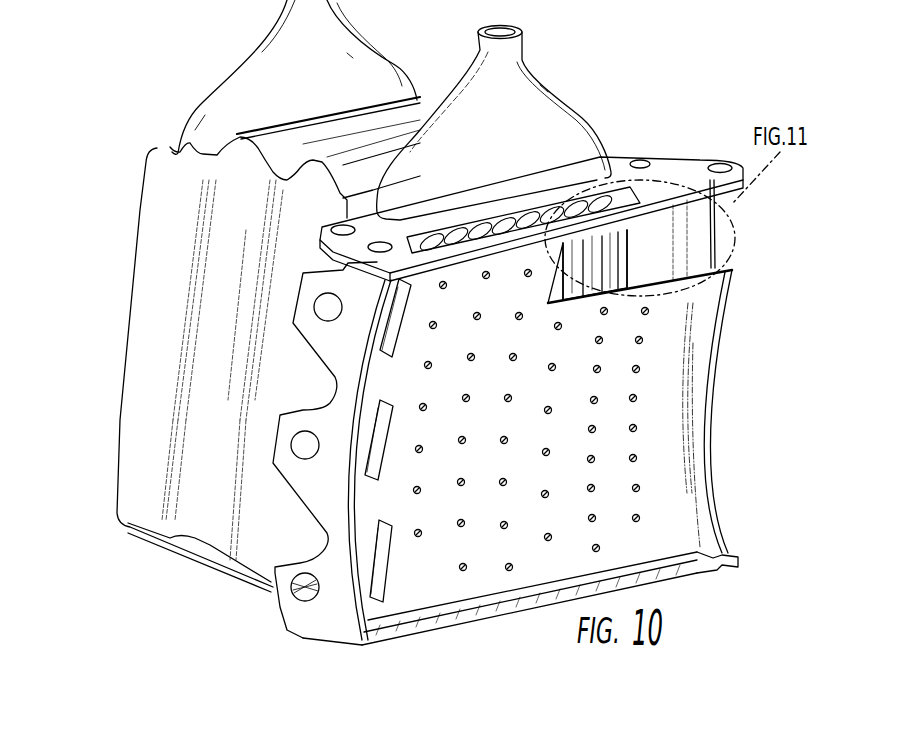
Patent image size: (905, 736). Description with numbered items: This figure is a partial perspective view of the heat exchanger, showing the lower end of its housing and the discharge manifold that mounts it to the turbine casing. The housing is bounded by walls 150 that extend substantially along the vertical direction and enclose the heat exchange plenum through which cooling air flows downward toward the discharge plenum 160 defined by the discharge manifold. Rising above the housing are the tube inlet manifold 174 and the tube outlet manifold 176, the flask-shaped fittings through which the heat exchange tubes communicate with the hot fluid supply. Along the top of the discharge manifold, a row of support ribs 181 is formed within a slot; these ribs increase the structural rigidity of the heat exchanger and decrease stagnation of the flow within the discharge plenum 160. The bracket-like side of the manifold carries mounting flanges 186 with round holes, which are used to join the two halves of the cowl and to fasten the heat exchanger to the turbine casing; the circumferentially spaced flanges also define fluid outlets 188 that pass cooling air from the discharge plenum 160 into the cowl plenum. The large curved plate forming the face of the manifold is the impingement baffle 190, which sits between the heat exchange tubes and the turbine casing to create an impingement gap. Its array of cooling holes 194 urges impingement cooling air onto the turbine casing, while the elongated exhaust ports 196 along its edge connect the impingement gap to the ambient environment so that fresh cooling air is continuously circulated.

The walls 150 is at (150, 365).
The discharge plenum 160 is at (558, 272).
The tube inlet manifold 174 is at (511, 145).
The tube outlet manifold 176 is at (322, 76).
The support ribs 181 is at (667, 195).
The mounting flanges 186 is at (293, 463).
The fluid outlets 188 is at (447, 233).
The impingement baffle 190 is at (667, 455).
The cooling holes 194 is at (640, 488).
The exhaust ports 196 is at (378, 558).